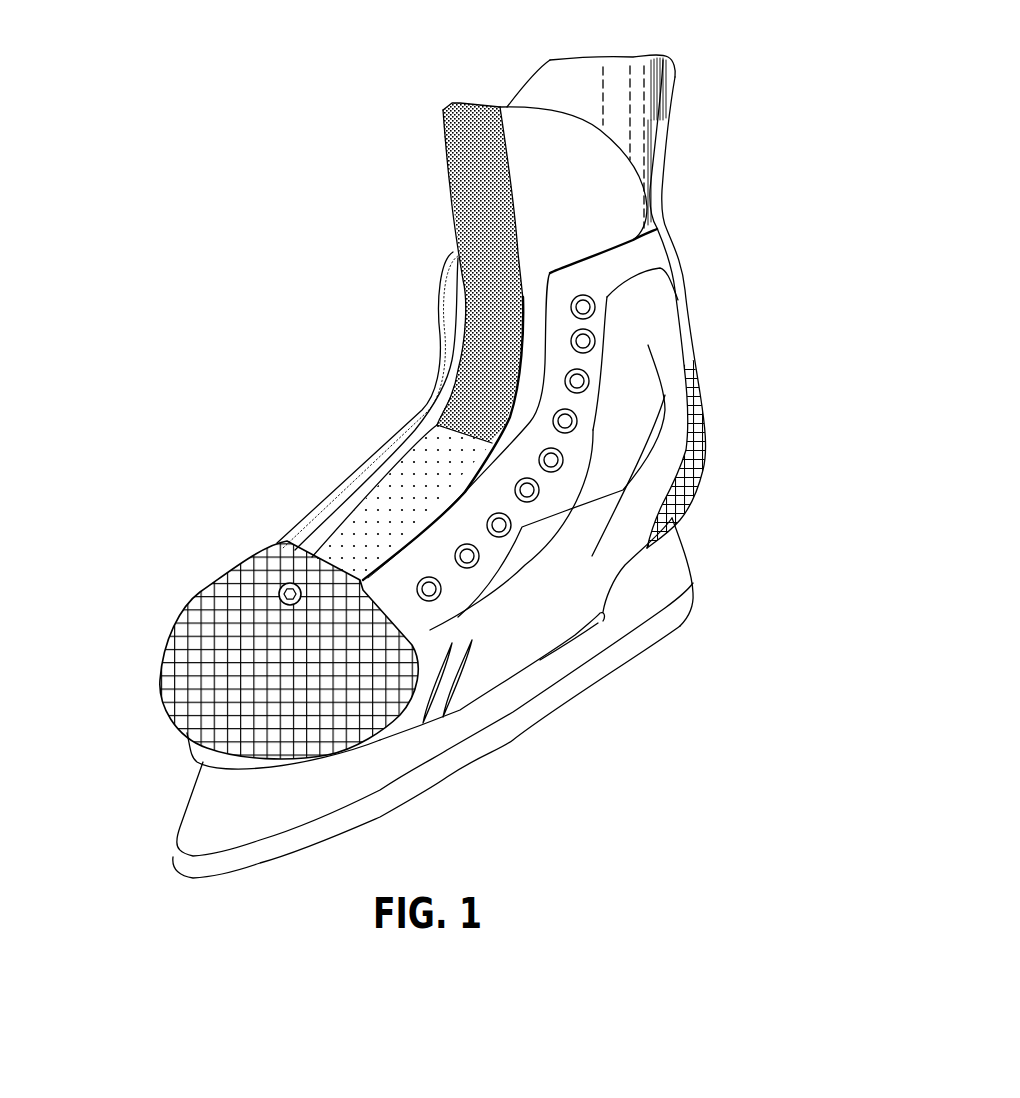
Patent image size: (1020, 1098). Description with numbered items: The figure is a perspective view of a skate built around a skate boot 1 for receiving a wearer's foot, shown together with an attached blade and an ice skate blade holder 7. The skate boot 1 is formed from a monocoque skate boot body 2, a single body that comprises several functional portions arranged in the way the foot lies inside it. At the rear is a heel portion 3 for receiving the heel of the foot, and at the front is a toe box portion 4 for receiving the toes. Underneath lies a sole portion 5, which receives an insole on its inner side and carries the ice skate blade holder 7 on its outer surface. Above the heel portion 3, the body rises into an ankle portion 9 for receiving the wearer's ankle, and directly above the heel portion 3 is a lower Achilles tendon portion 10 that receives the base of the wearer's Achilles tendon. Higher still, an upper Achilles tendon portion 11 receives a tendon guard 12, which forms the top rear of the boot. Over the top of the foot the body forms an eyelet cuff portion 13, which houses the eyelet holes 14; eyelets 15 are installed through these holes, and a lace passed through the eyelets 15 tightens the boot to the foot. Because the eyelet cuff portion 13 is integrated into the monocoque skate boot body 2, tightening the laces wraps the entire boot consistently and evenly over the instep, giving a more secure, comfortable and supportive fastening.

The skate boot 1 is at (350, 273).
The monocoque skate boot body 2 is at (323, 475).
The heel portion 3 is at (707, 422).
The toe box portion 4 is at (180, 650).
The sole portion 5 is at (492, 696).
The ice skate blade holder 7 is at (180, 827).
The ankle portion 9 is at (648, 343).
The lower Achilles tendon portion 10 is at (697, 348).
The upper Achilles tendon portion 11 is at (683, 277).
The tendon guard 12 is at (590, 90).
The eyelet cuff portion 13 is at (500, 507).
The eyelet holes 14 is at (553, 462).
The eyelets 15 is at (572, 424).